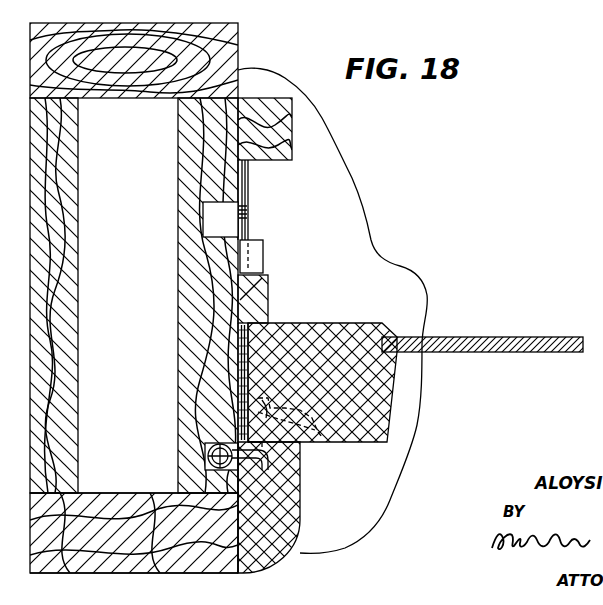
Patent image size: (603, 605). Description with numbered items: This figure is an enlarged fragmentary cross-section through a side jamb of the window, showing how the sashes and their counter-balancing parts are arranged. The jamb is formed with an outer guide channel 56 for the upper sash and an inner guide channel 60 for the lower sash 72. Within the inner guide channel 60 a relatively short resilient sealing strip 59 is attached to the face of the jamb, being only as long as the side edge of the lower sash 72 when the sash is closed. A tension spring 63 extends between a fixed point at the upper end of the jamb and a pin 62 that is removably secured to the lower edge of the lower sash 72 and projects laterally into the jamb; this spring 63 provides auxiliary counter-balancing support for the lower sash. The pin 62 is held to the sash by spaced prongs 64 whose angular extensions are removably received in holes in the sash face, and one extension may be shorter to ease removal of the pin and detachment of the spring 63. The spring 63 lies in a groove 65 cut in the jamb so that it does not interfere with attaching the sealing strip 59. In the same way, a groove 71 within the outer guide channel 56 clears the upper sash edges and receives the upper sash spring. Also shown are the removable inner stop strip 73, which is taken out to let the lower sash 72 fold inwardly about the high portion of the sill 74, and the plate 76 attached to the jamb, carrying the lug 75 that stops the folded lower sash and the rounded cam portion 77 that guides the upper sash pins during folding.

The outer guide channel 56 is at (263, 270).
The sealing strip 59 is at (270, 362).
The inner guide channel 60 is at (301, 442).
The pin 62 is at (303, 522).
The tension spring 63 is at (205, 447).
The prong 64 is at (327, 433).
The groove 65 is at (210, 458).
The groove 71 is at (214, 203).
The lower sash 72 is at (362, 323).
The inner stop strip 73 is at (300, 517).
The sill 74 is at (329, 144).
The lug 75 is at (262, 255).
The plate 76 is at (246, 231).
The rounded cam portion 77 is at (246, 207).